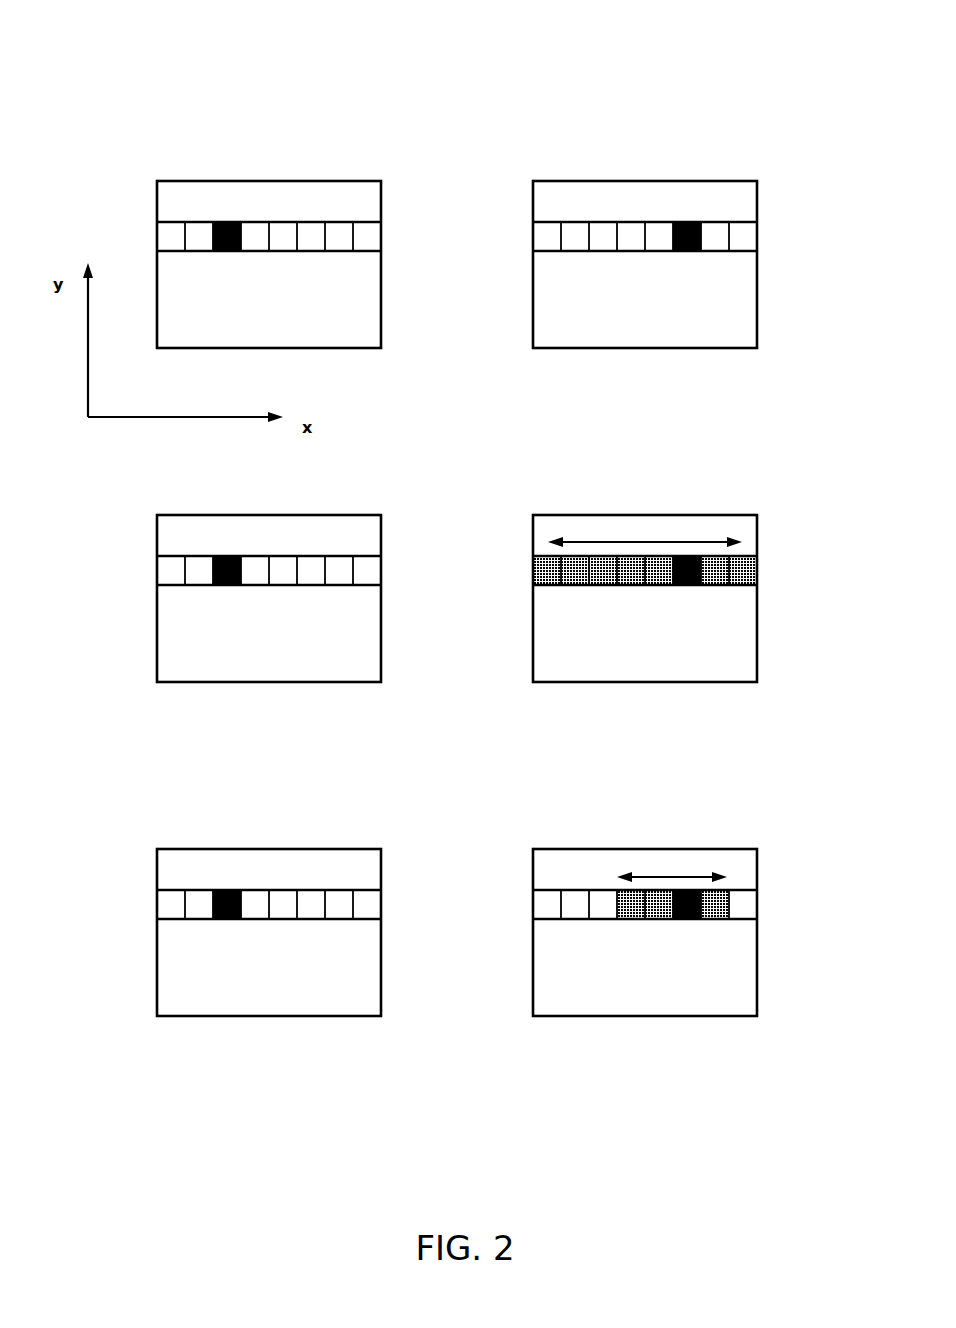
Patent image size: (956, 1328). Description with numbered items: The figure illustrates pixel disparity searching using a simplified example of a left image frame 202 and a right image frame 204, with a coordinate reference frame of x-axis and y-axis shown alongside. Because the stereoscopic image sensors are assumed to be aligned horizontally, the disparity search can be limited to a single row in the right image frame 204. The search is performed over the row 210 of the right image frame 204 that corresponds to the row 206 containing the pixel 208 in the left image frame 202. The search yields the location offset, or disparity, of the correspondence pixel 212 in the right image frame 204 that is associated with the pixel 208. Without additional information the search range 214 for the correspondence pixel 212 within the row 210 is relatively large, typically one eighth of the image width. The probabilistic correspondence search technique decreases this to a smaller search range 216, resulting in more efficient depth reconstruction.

The left image frame 202 is at (150, 88).
The right image frame 204 is at (757, 88).
The row 206 is at (157, 236).
The pixel 208 is at (228, 252).
The row 210 is at (757, 236).
The correspondence pixel 212 is at (688, 252).
The search range 214 is at (628, 540).
The decreased search range 216 is at (676, 875).